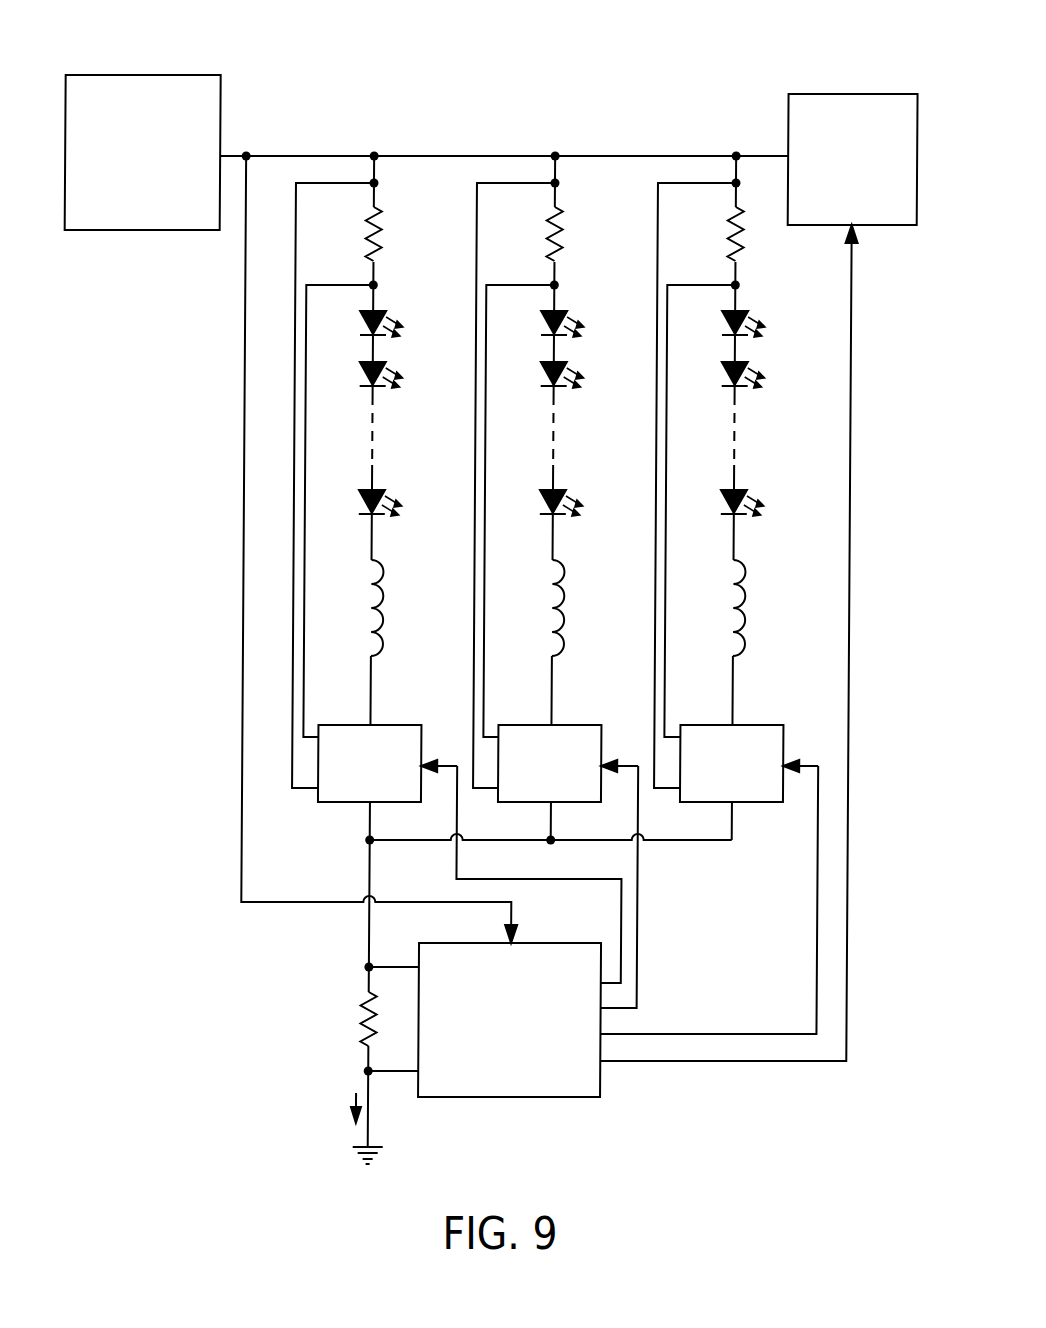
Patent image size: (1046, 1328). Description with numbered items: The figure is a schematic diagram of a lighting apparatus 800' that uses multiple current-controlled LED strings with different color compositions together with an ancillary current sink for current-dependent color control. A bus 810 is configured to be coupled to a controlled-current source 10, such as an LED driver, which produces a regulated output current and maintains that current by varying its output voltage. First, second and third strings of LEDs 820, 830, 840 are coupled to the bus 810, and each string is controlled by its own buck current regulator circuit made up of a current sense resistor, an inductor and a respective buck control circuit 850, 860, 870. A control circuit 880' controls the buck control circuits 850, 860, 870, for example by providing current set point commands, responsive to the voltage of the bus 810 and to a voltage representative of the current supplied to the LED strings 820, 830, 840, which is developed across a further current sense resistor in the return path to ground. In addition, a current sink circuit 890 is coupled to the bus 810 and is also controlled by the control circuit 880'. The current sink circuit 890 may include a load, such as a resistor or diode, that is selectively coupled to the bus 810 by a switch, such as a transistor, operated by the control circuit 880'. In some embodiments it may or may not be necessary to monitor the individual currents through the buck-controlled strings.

The controlled-current source 10 is at (143, 75).
The apparatus 800' is at (489, 585).
The bus 810 is at (660, 156).
The first string of LEDs 820 is at (401, 556).
The second string of LEDs 830 is at (579, 556).
The third string of LEDs 840 is at (773, 556).
The buck control circuit 850 is at (397, 725).
The buck control circuit 860 is at (577, 725).
The buck control circuit 870 is at (757, 725).
The control circuit 880' is at (509, 1045).
The current sink circuit 890 is at (840, 94).